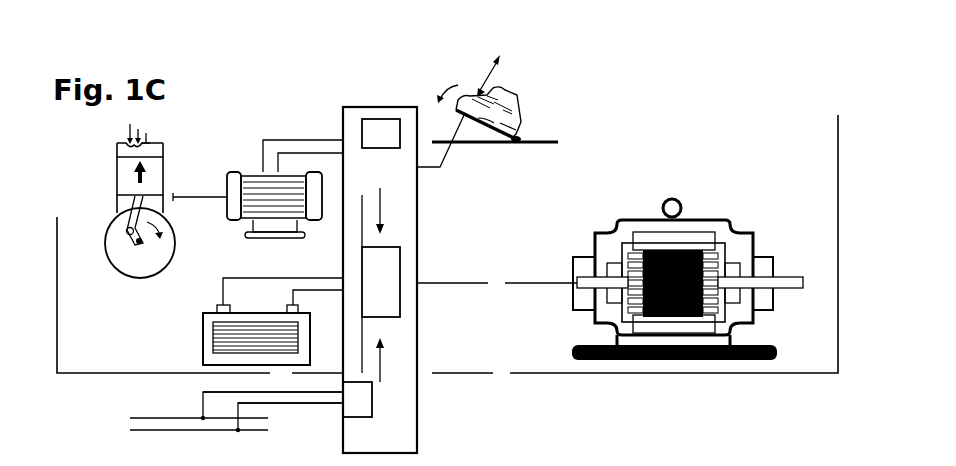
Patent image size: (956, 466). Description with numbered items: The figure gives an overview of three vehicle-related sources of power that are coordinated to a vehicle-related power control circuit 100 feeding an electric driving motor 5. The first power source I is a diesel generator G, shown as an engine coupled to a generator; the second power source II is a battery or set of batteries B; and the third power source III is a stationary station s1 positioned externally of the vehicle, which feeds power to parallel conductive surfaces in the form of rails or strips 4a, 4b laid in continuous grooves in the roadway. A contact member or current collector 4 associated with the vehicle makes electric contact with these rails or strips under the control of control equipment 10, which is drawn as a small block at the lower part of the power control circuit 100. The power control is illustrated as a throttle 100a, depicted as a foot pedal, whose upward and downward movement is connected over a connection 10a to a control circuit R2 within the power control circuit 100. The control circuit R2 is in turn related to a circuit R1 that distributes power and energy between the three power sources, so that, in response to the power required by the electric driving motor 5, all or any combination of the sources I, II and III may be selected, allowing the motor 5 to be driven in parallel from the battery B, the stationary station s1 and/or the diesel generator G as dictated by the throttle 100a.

The power control circuit 100 is at (408, 442).
The throttle 100a is at (495, 96).
The control equipment 10 is at (360, 397).
The connection 10a is at (428, 168).
The circuit R1 is at (385, 297).
The control circuit R2 is at (370, 126).
The first power source I is at (224, 201).
The diesel generator G is at (255, 238).
The second power source II is at (235, 321).
The battery B is at (213, 350).
The third power source III is at (204, 419).
The stationary station s1 is at (166, 427).
The rail or strip 4a is at (225, 400).
The current collector 4 is at (243, 393).
The rail or strip 4b is at (255, 406).
The electric driving motor 5 is at (700, 222).